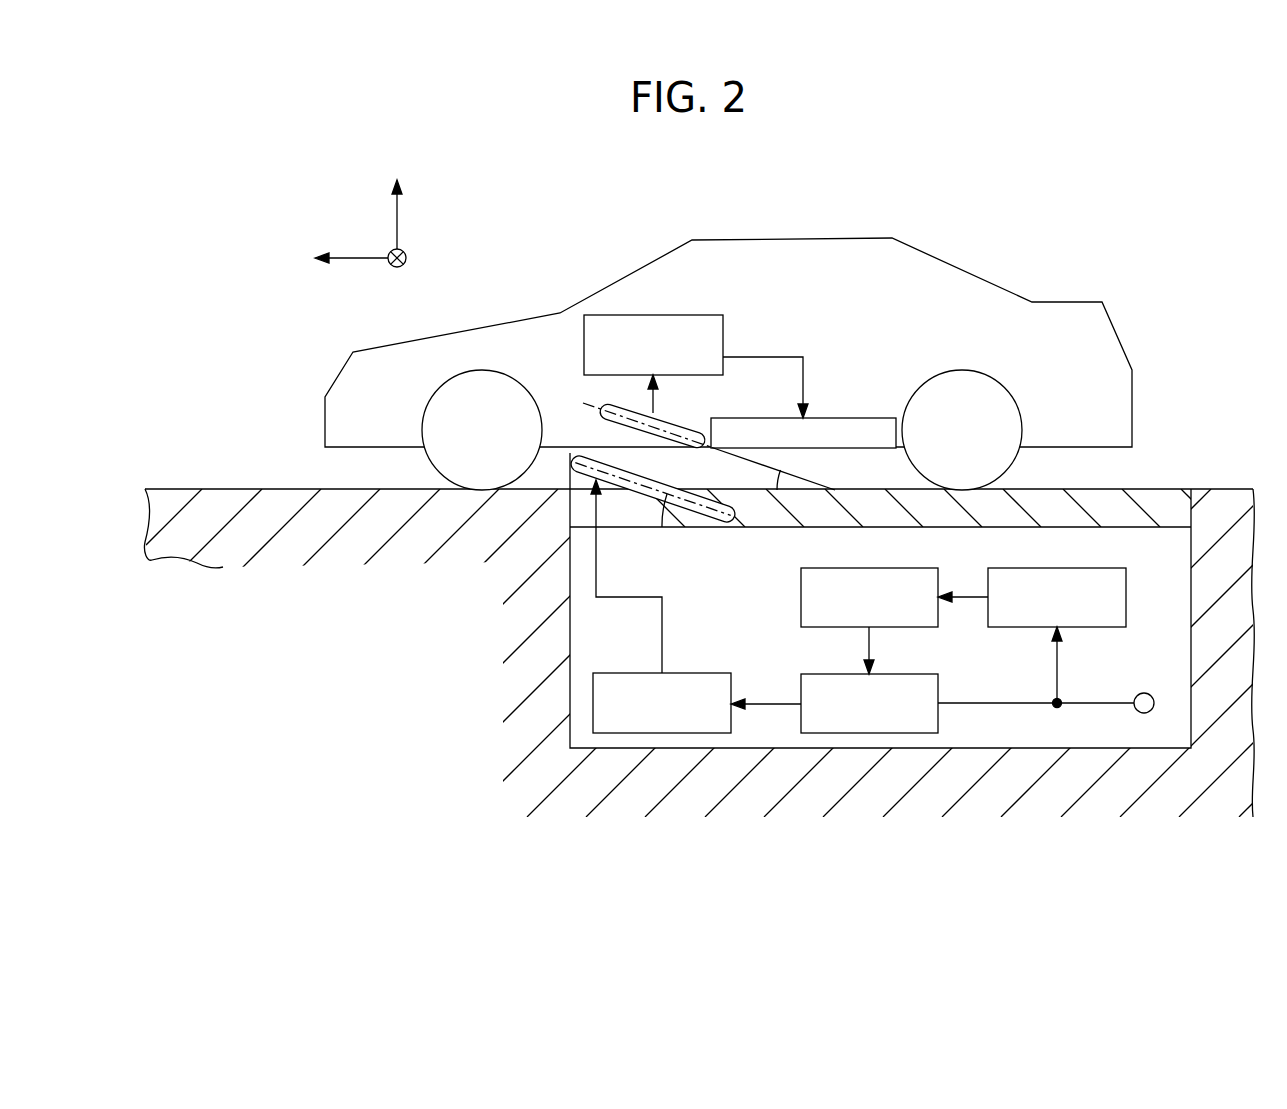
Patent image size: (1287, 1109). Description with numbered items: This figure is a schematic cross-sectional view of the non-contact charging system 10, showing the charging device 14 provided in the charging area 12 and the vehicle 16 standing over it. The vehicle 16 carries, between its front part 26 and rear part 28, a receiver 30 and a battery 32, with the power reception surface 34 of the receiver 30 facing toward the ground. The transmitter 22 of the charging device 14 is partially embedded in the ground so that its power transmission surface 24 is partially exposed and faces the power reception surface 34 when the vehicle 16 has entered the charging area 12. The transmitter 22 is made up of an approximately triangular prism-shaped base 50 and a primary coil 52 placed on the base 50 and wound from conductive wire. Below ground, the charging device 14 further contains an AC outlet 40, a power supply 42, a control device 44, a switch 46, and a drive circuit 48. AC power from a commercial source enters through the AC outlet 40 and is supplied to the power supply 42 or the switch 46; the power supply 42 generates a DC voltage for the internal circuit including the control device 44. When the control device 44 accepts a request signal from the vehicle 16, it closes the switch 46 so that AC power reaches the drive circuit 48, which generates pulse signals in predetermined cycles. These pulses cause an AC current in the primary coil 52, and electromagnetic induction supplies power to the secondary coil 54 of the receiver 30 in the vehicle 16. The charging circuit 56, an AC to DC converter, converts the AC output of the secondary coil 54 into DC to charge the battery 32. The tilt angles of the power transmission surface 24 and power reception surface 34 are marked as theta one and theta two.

The non-contact charging system 10 is at (240, 187).
The charging area 12 is at (328, 474).
The charging device 14 is at (1162, 537).
The vehicle 16 is at (724, 250).
The transmitter 22 is at (745, 580).
The power transmission surface 24 is at (633, 474).
The front part 26 is at (348, 388).
The rear part 28 is at (1107, 352).
The receiver 30 is at (540, 327).
The battery 32 is at (857, 416).
The power reception surface 34 is at (610, 423).
The AC outlet 40 is at (1143, 692).
The power supply 42 is at (1080, 568).
The control device 44 is at (905, 568).
The switch 46 is at (905, 674).
The drive circuit 48 is at (700, 673).
The base 50 is at (689, 522).
The primary coil 52 is at (721, 522).
The secondary coil 54 is at (607, 405).
The charging circuit 56 is at (583, 328).